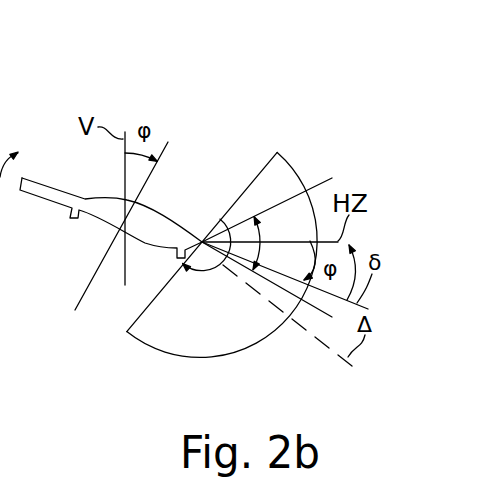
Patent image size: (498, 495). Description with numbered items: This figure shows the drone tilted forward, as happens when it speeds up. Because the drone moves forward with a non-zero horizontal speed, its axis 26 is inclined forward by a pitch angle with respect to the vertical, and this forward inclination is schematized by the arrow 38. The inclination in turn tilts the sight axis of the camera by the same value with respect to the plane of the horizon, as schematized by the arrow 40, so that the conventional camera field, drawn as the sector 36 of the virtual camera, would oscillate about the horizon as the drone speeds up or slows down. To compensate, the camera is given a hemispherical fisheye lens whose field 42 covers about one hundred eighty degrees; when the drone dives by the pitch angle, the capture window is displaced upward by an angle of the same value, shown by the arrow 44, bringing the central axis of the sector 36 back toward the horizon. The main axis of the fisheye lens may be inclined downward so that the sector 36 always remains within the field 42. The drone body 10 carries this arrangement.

The vehicle 10 is at (108, 201).
The axis of the drone 26 is at (170, 143).
The sector of the virtual camera 36 is at (332, 178).
The arrow of forward inclination 38 is at (156, 169).
The arrow of camera axis inclination 40 is at (307, 261).
The field of the fisheye lens 42 is at (268, 168).
The arrow of capture window displacement 44 is at (353, 253).